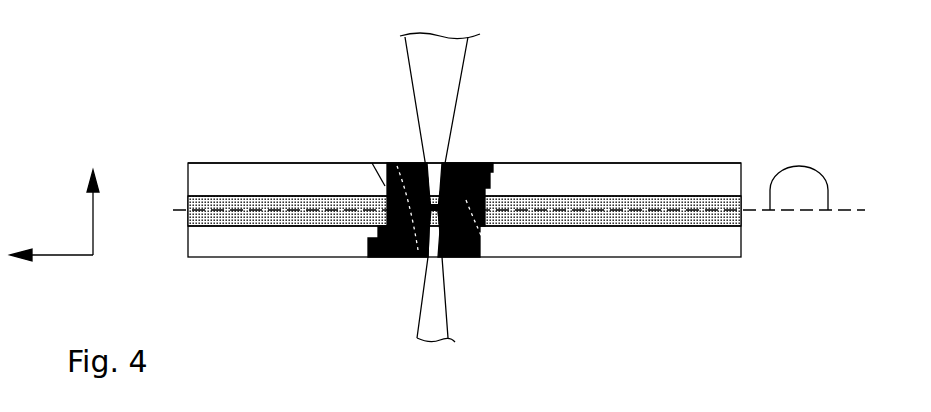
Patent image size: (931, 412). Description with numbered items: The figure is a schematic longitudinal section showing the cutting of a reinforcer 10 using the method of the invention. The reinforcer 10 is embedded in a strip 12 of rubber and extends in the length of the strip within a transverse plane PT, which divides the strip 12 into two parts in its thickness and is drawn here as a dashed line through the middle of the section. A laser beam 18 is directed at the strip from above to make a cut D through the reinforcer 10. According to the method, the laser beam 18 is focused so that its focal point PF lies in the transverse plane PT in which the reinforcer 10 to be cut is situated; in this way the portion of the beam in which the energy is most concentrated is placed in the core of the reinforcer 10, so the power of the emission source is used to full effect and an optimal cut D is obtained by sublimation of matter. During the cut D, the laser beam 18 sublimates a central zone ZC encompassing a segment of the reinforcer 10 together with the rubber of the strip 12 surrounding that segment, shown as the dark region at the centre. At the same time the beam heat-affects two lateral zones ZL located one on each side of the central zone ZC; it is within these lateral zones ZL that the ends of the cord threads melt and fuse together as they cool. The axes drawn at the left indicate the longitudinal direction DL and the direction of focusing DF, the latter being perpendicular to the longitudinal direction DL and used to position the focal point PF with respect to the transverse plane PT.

The reinforcer 10 is at (280, 236).
The strip 12 is at (636, 145).
The laser beam 18 is at (427, 72).
The cut D is at (500, 78).
The central zone ZC is at (417, 163).
The lateral zones ZL is at (383, 257).
The focal point PF is at (372, 168).
The transverse plane PT is at (519, 188).
The direction of focusing DF is at (112, 212).
The longitudinal direction DL is at (51, 269).